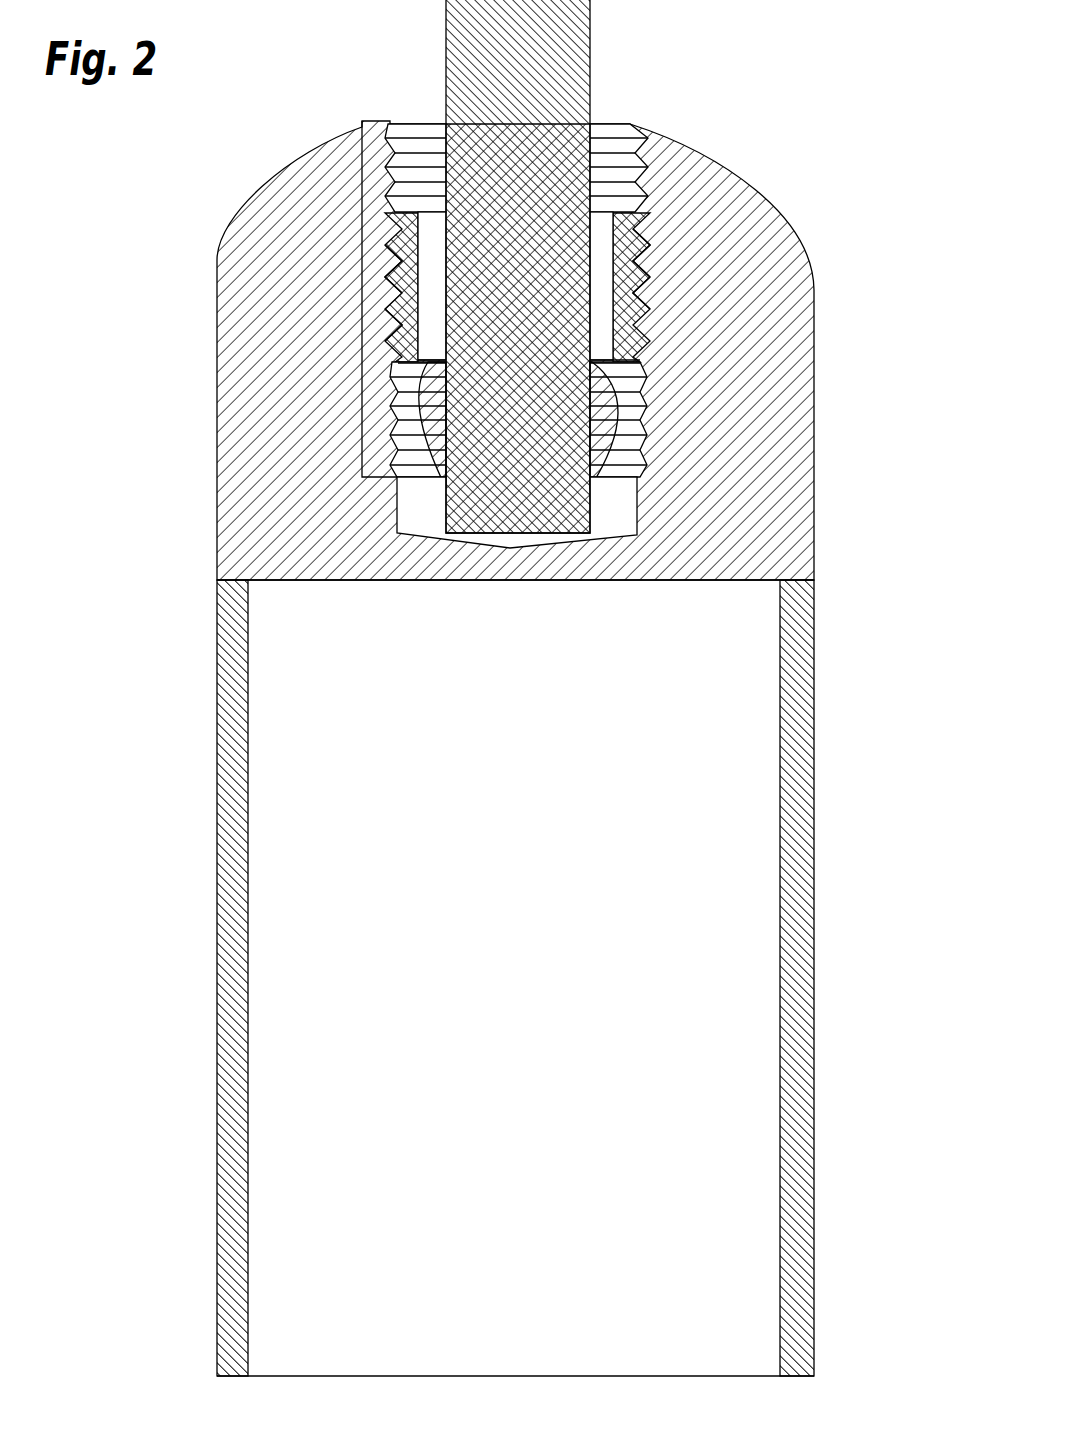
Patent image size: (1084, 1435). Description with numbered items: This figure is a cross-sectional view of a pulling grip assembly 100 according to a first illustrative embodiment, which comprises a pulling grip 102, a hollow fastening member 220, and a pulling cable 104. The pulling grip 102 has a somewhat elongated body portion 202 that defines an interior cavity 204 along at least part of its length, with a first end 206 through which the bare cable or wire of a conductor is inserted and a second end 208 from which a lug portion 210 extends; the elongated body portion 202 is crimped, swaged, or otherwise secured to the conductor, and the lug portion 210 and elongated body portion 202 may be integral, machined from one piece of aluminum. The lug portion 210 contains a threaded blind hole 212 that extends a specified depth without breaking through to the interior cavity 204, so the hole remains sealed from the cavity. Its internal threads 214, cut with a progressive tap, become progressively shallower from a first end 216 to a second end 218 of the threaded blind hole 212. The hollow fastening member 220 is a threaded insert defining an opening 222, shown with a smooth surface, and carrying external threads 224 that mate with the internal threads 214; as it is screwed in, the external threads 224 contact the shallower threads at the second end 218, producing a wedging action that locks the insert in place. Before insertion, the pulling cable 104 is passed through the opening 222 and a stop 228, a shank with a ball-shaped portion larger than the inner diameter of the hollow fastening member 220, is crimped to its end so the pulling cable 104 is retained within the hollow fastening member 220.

The pulling grip assembly 100 is at (840, 49).
The pulling grip 102 is at (513, 975).
The pulling cable 104 is at (592, 64).
The elongated body portion 202 is at (805, 790).
The interior cavity 204 is at (712, 975).
The first end 206 is at (815, 1373).
The second end 208 is at (815, 595).
The lug portion 210 is at (518, 334).
The threaded blind hole 212 is at (655, 172).
The internal threads 214 is at (362, 324).
The first end 216 is at (640, 124).
The second end 218 is at (635, 522).
The hollow fastening member 220 is at (650, 250).
The opening 222 is at (650, 212).
The external threads 224 is at (650, 293).
The stop 228 is at (640, 398).